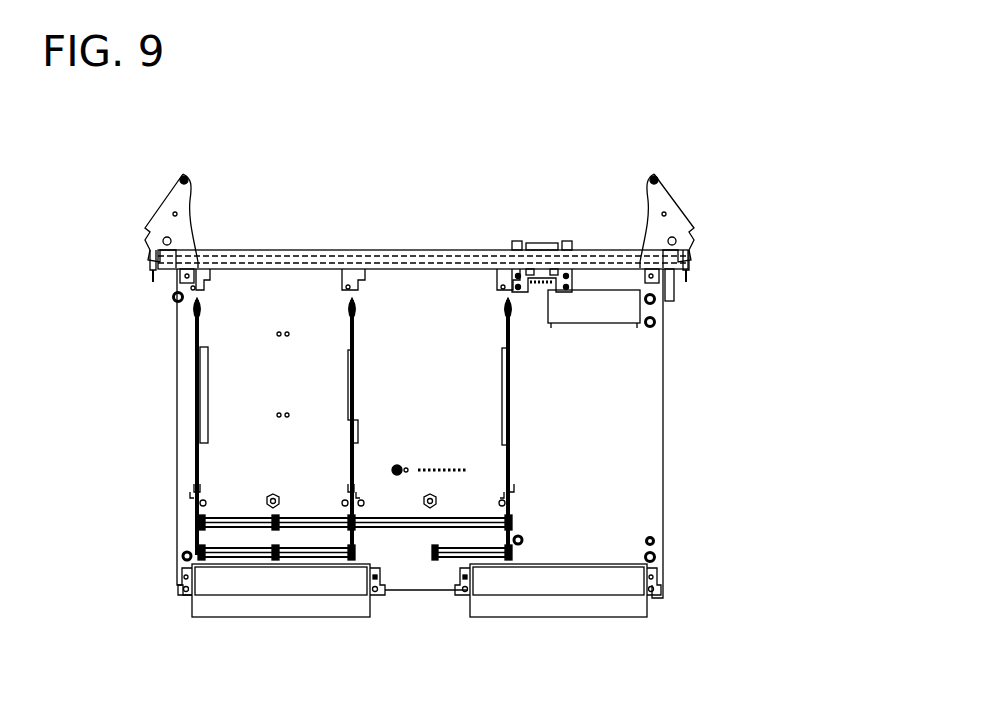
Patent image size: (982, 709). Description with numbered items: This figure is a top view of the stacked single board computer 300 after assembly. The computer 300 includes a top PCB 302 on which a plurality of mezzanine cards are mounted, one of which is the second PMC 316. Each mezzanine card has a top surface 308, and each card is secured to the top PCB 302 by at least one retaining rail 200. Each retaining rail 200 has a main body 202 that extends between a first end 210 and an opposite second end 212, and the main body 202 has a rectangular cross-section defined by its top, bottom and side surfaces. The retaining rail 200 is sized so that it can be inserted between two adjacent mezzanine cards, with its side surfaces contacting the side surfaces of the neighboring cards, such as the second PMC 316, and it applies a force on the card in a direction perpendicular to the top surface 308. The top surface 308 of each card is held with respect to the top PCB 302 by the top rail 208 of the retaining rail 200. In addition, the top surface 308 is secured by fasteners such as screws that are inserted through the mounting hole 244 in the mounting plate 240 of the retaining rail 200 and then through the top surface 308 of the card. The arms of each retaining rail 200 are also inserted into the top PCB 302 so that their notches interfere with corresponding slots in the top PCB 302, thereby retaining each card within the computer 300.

The retaining rail 200 is at (193, 392).
The main body 202 is at (350, 333).
The top rail 208 is at (355, 358).
The first end 210 is at (193, 511).
The second end 212 is at (200, 306).
The mounting plate 240 is at (352, 270).
The mounting hole 244 is at (358, 286).
The stacked single board computer 300 is at (718, 161).
The top PCB 302 is at (672, 411).
The top surface 308 is at (400, 512).
The second PMC 316 is at (290, 283).